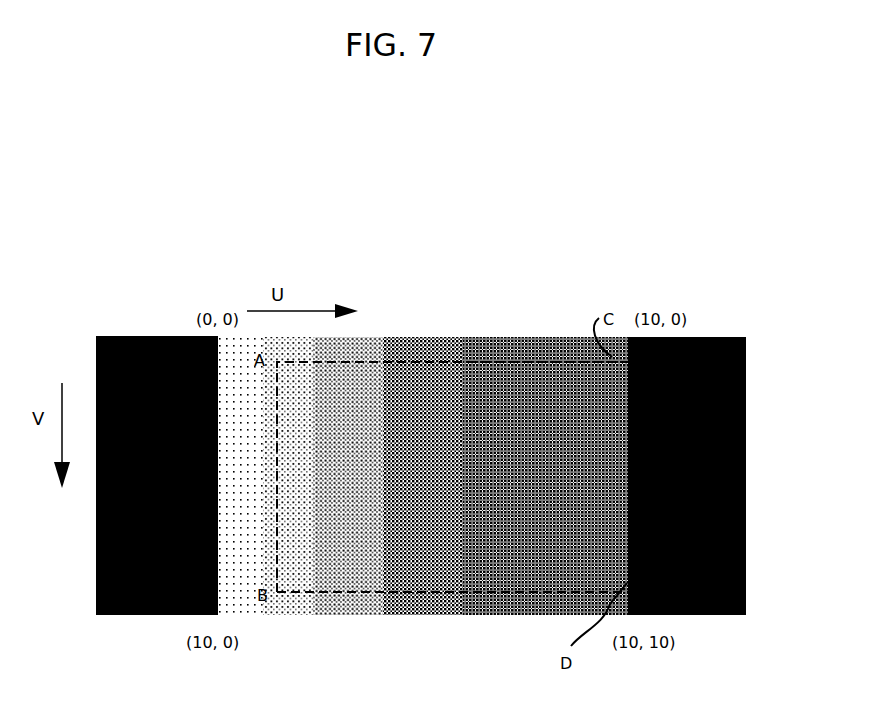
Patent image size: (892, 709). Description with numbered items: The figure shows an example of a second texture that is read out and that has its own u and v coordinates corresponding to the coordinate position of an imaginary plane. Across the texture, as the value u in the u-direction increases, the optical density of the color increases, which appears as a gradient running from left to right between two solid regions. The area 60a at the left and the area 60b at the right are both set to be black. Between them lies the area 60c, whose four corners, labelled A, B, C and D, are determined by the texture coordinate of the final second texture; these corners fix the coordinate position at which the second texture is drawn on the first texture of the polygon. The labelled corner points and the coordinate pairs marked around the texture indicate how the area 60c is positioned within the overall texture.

The area 60a is at (120, 617).
The area 60b is at (711, 617).
The area 60c is at (377, 581).